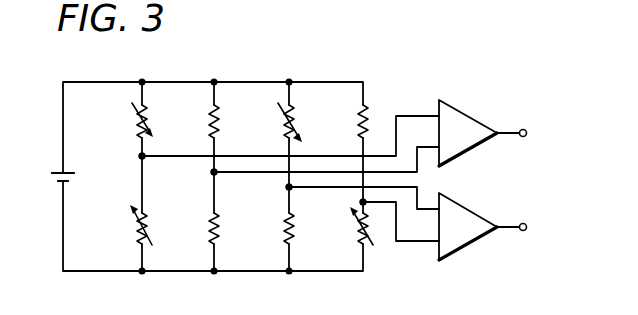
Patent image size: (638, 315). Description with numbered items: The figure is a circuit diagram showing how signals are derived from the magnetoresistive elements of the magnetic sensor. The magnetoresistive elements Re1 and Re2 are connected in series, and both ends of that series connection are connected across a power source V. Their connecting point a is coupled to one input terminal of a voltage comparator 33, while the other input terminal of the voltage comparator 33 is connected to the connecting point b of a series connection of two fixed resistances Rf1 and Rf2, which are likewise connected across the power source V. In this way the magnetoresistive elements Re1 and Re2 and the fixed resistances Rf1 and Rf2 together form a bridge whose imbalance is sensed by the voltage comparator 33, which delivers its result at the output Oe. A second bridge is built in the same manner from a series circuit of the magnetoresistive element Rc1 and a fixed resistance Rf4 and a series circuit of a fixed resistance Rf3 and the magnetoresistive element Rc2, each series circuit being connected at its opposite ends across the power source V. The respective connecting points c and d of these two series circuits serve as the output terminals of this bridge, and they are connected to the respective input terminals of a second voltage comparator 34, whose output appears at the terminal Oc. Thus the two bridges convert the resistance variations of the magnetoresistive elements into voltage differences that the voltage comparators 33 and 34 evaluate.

The voltage comparator 33 is at (471, 112).
The voltage comparator 34 is at (471, 204).
The power source V is at (60, 170).
The magnetoresistive element Re1 is at (134, 124).
The magnetoresistive element Re2 is at (134, 231).
The fixed resistance Rf1 is at (207, 124).
The fixed resistance Rf2 is at (207, 231).
The fixed resistance Rf3 is at (357, 124).
The fixed resistance Rf4 is at (282, 231).
The magnetoresistive element Rc1 is at (283, 124).
The magnetoresistive element Rc2 is at (357, 231).
The connecting point a is at (134, 158).
The connecting point b is at (207, 172).
The connecting point c is at (282, 187).
The connecting point d is at (370, 212).
The output terminal Oe is at (537, 135).
The output terminal Oc is at (536, 229).